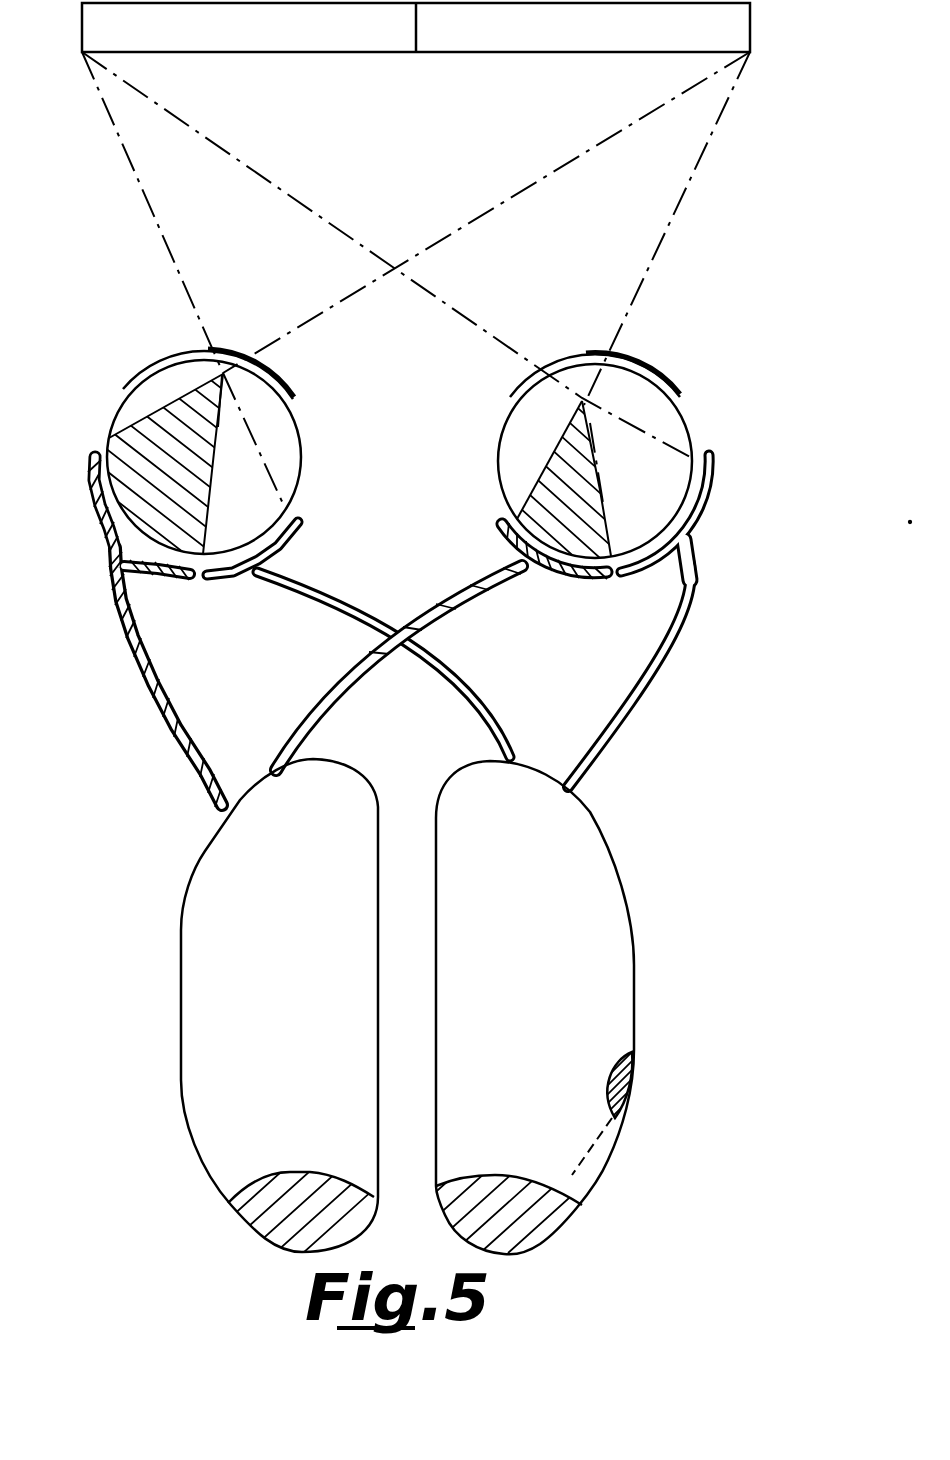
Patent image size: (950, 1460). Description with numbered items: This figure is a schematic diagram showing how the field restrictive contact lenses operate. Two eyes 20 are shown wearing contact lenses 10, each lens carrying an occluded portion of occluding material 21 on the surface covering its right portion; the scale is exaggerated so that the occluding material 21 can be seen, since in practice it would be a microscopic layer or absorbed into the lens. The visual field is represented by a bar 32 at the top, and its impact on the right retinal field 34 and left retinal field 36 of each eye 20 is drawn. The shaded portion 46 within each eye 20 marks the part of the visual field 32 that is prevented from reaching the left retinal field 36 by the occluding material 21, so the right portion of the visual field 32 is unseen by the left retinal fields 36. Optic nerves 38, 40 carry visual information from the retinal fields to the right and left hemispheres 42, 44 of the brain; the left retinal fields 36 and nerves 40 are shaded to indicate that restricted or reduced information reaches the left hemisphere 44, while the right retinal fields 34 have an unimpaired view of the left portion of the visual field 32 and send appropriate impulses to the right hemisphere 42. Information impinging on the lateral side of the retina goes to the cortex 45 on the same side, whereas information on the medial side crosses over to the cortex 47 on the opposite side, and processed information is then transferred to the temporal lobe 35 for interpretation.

The contact lens 10 is at (167, 358).
The eye 20 is at (300, 435).
The occluded portion 21 is at (277, 372).
The visual field 32 is at (752, 40).
The right retinal field 34 is at (233, 570).
The temporal lobe 35 is at (633, 1080).
The left retinal field 36 is at (87, 478).
The optic nerve 38 is at (353, 610).
The optic nerve 40 is at (138, 648).
The right hemisphere 42 is at (630, 911).
The left hemisphere 44 is at (185, 898).
The cortex 45 is at (552, 1225).
The shaded portion 46 is at (133, 423).
The cortex 47 is at (278, 1223).